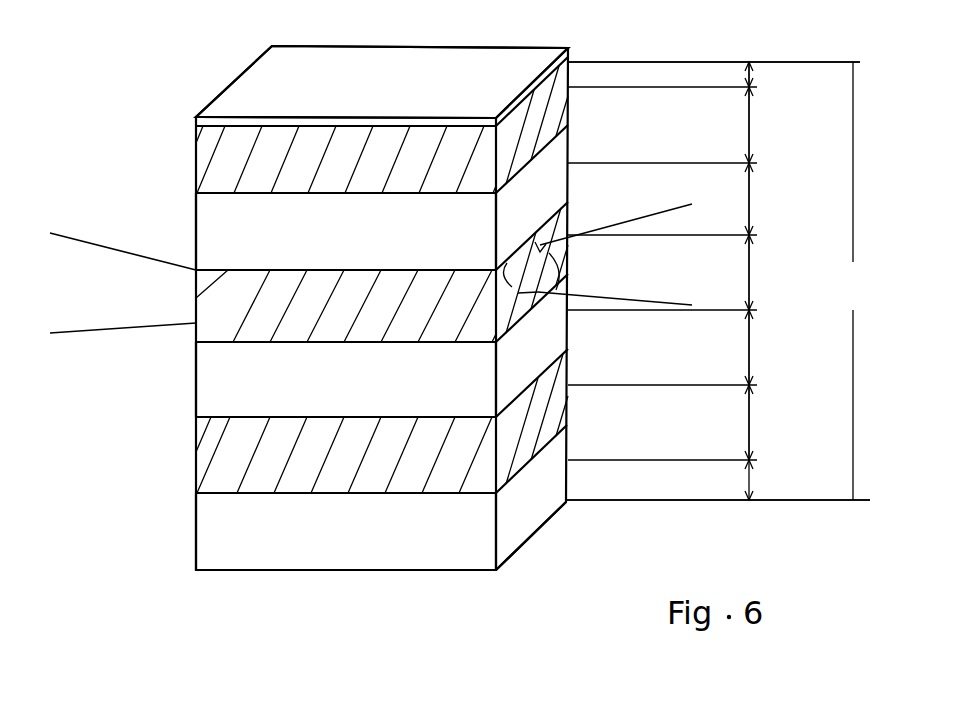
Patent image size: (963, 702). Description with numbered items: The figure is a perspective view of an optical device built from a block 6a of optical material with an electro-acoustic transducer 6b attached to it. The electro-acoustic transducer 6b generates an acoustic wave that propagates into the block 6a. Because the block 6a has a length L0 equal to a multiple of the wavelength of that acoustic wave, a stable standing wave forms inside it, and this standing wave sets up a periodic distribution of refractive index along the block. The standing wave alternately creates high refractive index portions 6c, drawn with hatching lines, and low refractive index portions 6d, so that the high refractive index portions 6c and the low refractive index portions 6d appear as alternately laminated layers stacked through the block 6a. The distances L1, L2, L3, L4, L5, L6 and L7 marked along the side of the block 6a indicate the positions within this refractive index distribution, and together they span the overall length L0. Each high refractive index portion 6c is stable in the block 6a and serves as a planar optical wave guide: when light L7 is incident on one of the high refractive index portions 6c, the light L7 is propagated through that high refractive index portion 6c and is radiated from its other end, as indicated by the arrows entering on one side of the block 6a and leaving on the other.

The block of optical material 6a is at (188, 545).
The electro-acoustic transducer 6b is at (405, 73).
The high refractive index portion 6c is at (197, 157).
The low refractive index portion 6d is at (205, 228).
The length of the block L0 is at (718, 281).
The distance L1 is at (752, 72).
The distance L2 is at (752, 133).
The distance L3 is at (752, 202).
The distance L4 is at (752, 280).
The distance L5 is at (752, 355).
The distance L6 is at (752, 432).
The light / distance L7 is at (190, 289).